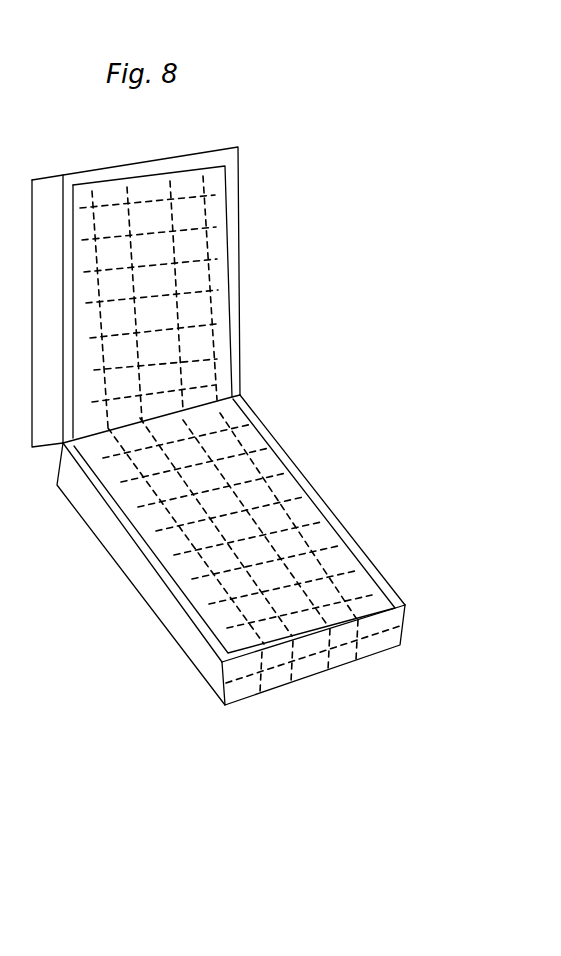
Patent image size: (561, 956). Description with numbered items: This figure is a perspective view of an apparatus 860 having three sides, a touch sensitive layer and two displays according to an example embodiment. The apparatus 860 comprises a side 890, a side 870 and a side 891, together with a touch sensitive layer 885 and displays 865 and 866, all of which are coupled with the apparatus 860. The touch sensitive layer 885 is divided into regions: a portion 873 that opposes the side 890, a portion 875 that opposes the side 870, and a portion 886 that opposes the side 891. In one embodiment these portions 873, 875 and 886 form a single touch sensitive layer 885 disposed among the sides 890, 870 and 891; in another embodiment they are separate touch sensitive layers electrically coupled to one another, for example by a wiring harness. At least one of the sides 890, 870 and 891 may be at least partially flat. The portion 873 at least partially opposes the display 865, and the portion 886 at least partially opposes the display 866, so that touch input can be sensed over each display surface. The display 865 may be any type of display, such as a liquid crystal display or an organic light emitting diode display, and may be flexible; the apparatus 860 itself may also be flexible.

The apparatus 860 is at (205, 133).
The display 865 is at (228, 273).
The display 866 is at (312, 490).
The side 870 is at (393, 620).
The portion 873 is at (177, 318).
The portion 875 is at (343, 650).
The touch sensitive layer 885 is at (205, 240).
The portion 886 is at (308, 528).
The side 890 is at (187, 213).
The side 891 is at (323, 582).